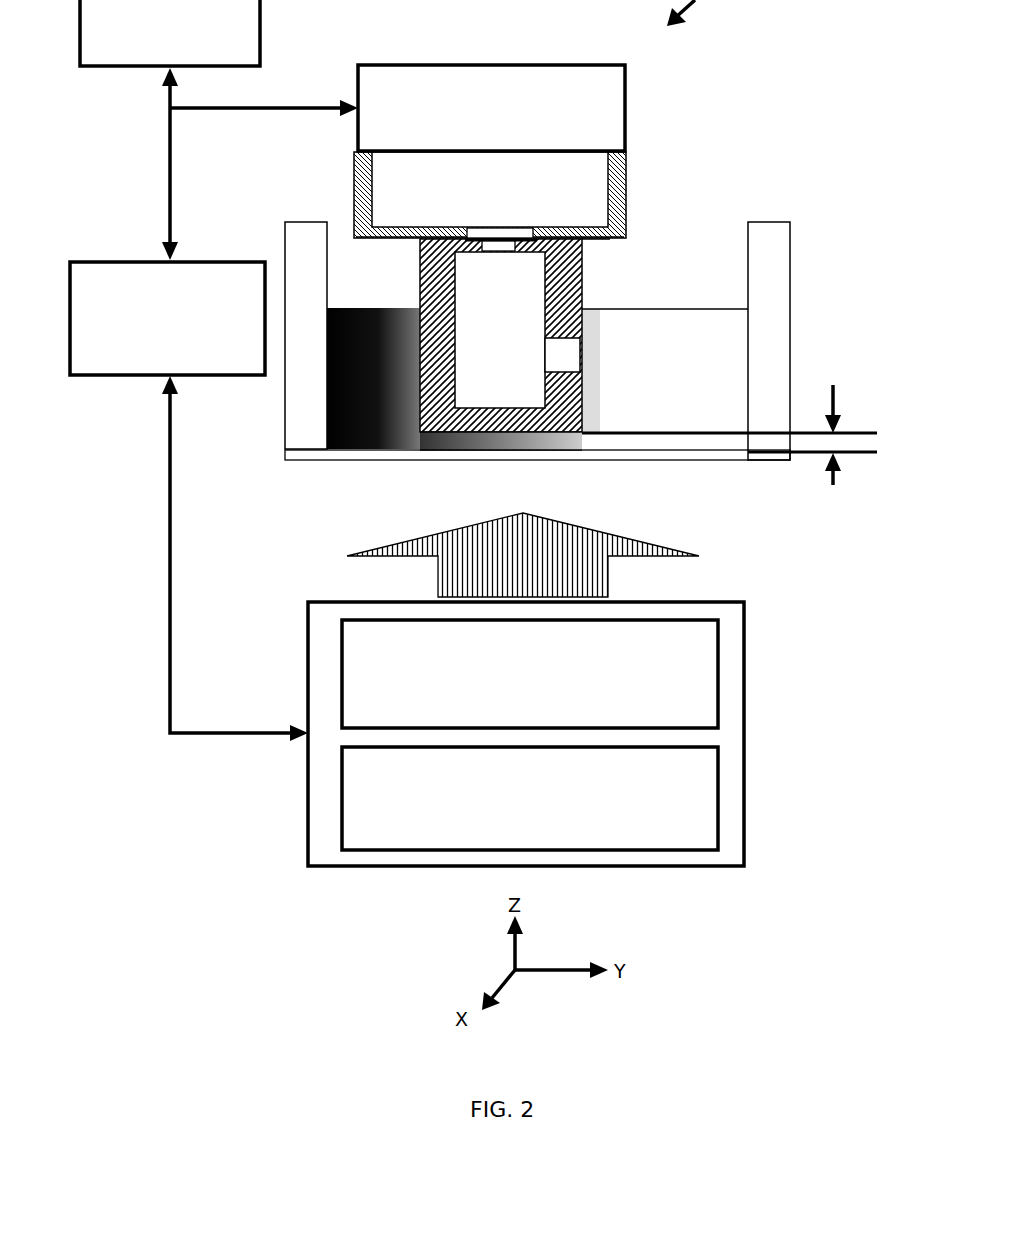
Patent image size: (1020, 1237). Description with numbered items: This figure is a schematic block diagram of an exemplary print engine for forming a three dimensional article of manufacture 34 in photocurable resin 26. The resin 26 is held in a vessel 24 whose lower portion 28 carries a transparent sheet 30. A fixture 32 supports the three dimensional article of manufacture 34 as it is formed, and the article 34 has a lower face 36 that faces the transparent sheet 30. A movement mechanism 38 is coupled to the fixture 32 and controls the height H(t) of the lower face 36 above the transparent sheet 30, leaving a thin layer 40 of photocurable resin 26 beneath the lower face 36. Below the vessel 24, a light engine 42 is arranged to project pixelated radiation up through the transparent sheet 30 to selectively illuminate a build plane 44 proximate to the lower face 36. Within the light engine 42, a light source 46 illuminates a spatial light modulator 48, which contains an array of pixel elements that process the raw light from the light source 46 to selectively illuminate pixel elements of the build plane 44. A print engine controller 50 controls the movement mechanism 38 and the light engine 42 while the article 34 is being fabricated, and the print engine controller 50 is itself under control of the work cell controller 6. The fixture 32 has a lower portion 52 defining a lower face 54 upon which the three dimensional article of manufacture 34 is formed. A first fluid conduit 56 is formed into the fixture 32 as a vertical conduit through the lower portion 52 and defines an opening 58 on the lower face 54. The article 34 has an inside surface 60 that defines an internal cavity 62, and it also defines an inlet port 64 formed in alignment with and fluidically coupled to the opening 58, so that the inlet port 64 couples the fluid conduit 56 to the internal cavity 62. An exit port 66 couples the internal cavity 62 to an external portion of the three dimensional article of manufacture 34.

The work cell controller 6 is at (262, 24).
The vessel 24 is at (822, 220).
The photocurable resin 26 is at (675, 338).
The lower portion 28 is at (317, 458).
The transparent sheet 30 is at (733, 458).
The fixture 32 is at (628, 195).
The three dimensional article of manufacture 34 is at (437, 305).
The lower face 36 is at (498, 432).
The movement mechanism 38 is at (627, 105).
The thin layer 40 is at (448, 443).
The light engine 42 is at (572, 734).
The build plane 44 is at (540, 433).
The light source 46 is at (718, 805).
The spatial light modulator 48 is at (718, 712).
The print engine controller 50 is at (118, 378).
The lower portion 52 is at (370, 236).
The lower face 54 is at (583, 241).
The first fluid conduit 56 is at (485, 232).
The opening 58 is at (498, 243).
The inside surface 60 is at (543, 290).
The internal cavity 62 is at (500, 330).
The inlet port 64 is at (498, 243).
The exit port 66 is at (560, 355).